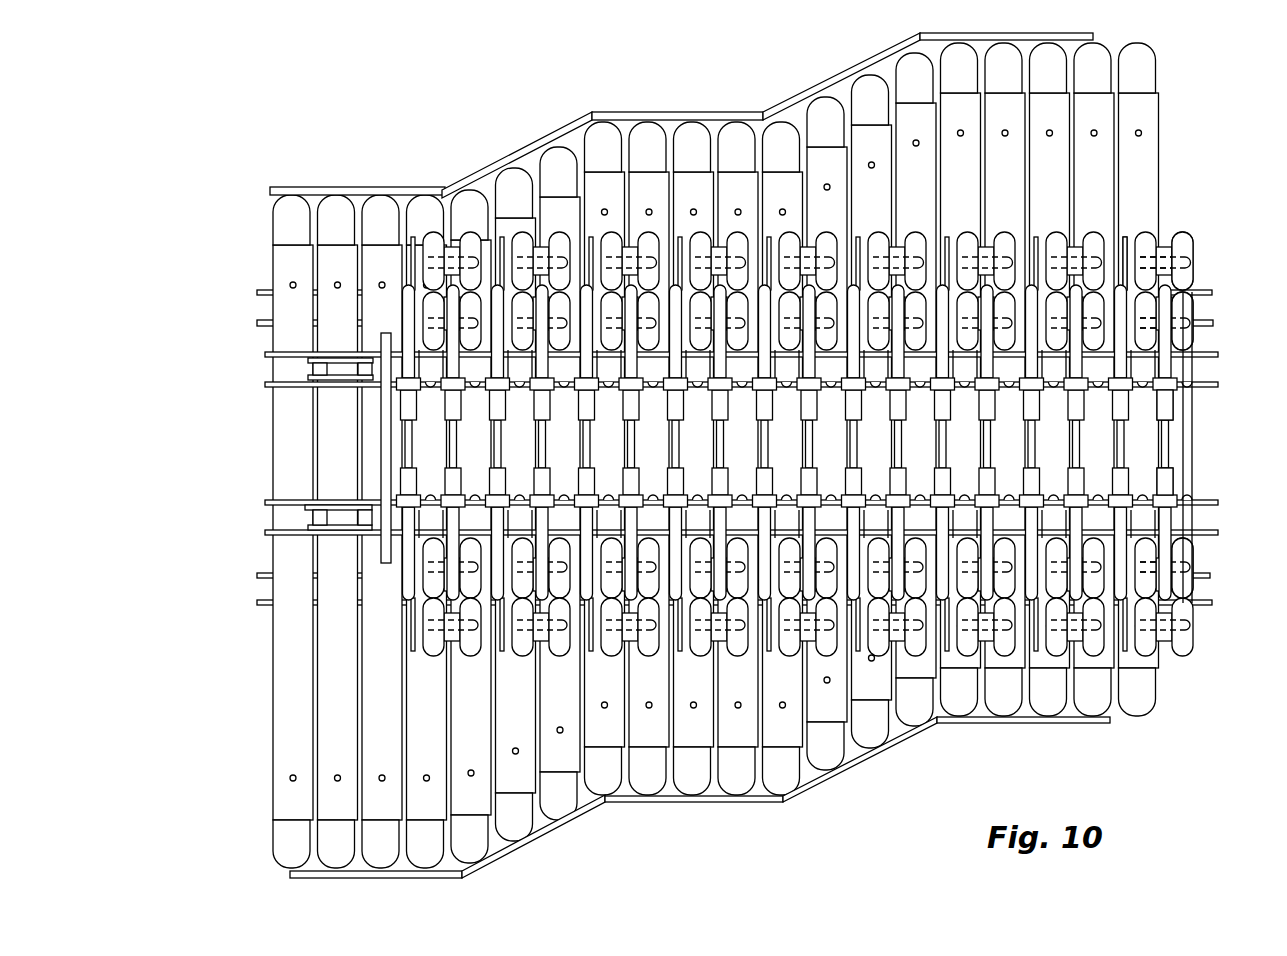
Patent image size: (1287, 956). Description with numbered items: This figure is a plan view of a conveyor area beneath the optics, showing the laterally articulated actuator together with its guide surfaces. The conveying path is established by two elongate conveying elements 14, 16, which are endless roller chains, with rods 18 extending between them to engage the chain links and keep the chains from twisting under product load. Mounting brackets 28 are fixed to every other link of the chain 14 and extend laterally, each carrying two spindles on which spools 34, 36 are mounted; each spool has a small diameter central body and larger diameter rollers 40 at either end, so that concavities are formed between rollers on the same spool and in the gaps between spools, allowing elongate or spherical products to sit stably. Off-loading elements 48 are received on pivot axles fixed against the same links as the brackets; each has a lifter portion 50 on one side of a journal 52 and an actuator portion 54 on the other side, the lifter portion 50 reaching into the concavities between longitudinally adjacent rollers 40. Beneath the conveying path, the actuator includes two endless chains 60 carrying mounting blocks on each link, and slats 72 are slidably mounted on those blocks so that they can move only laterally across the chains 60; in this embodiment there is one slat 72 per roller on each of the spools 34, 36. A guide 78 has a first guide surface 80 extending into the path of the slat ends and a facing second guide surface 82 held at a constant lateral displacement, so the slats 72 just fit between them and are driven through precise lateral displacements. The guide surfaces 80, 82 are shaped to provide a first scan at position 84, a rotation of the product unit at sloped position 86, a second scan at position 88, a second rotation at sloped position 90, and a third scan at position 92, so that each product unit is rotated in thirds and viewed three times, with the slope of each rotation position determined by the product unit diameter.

The elongate conveying element 14 is at (1215, 500).
The elongate conveying element 16 is at (1210, 388).
The rod 18 is at (1195, 458).
The mounting bracket 28 is at (1126, 238).
The spool 34 is at (1185, 333).
The spool 36 is at (1185, 272).
The roller 40 is at (1181, 236).
The off-loading element 48 is at (1170, 420).
The lifter portion 50 is at (1185, 558).
The journal 52 is at (1185, 512).
The actuator portion 54 is at (1174, 478).
The endless chain 60 is at (1214, 292).
The slat 72 is at (1160, 145).
The guide 78 is at (684, 112).
The guide surface 80 is at (590, 804).
The guide surface 82 is at (842, 82).
The position 84 is at (292, 873).
The position 86 is at (512, 862).
The position 88 is at (718, 803).
The position 90 is at (826, 786).
The position 92 is at (1020, 724).